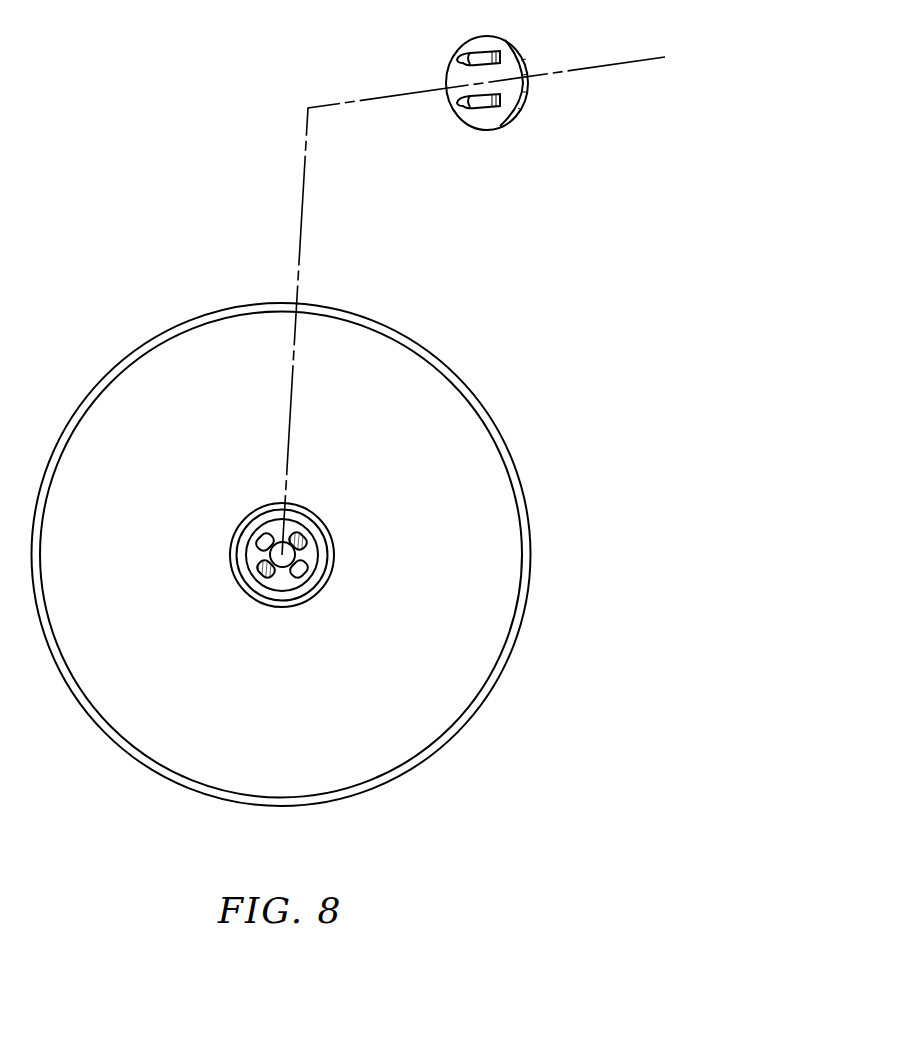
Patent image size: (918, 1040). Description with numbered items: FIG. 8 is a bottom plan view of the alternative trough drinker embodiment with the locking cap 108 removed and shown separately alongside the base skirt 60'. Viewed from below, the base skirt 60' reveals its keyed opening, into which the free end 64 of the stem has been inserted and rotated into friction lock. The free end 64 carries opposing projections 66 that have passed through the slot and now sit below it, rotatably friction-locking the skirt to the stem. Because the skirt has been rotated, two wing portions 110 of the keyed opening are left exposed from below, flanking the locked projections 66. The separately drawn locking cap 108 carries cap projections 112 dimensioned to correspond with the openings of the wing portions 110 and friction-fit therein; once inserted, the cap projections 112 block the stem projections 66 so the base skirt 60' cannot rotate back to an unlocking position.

The base skirt 60' is at (295, 554).
The free end 64 is at (297, 548).
The opposing projections 66 is at (254, 548).
The locking cap 108 is at (483, 122).
The wing portions 110 is at (308, 545).
The cap projections 112 is at (490, 55).